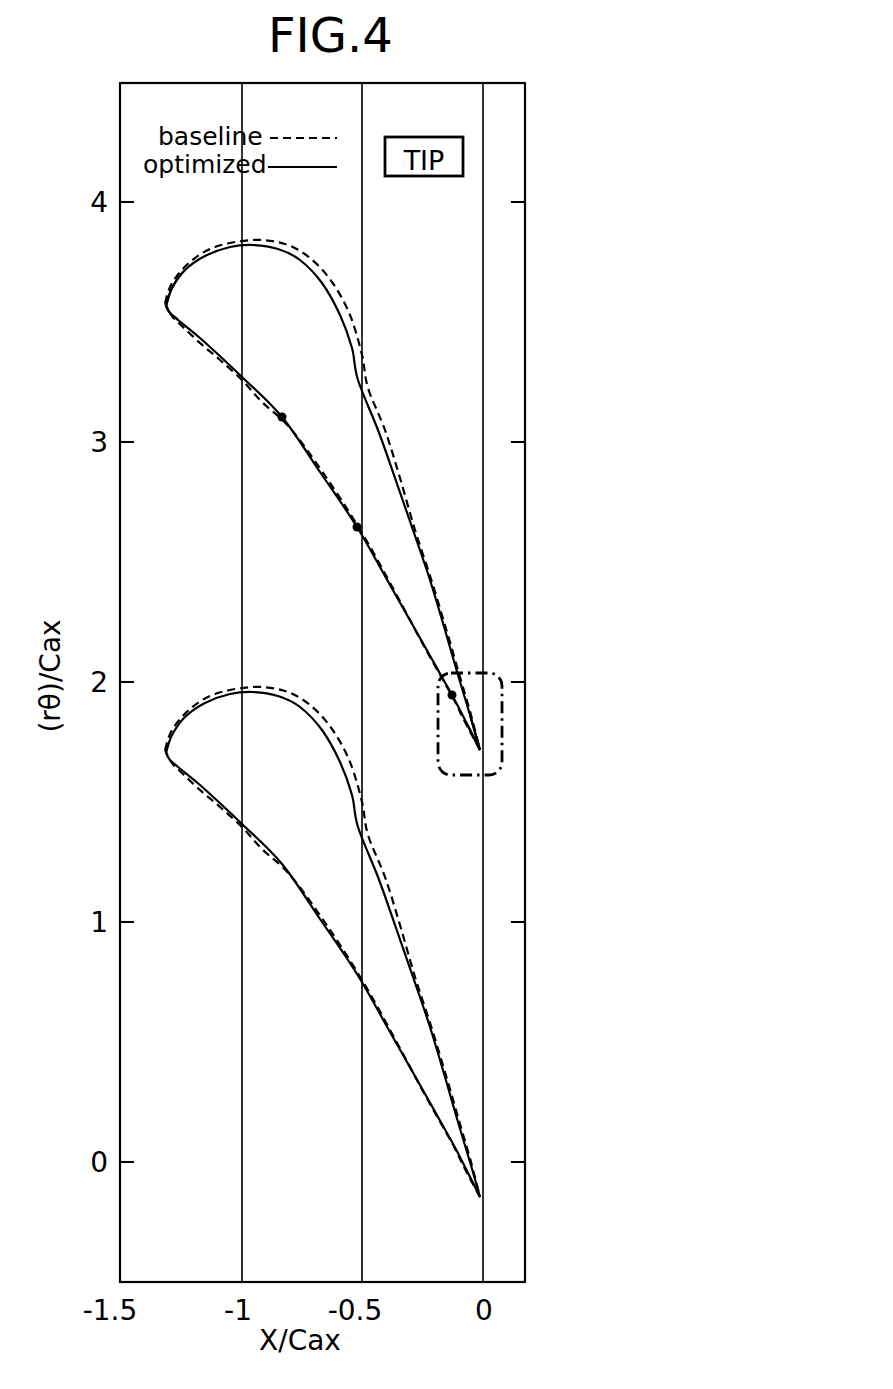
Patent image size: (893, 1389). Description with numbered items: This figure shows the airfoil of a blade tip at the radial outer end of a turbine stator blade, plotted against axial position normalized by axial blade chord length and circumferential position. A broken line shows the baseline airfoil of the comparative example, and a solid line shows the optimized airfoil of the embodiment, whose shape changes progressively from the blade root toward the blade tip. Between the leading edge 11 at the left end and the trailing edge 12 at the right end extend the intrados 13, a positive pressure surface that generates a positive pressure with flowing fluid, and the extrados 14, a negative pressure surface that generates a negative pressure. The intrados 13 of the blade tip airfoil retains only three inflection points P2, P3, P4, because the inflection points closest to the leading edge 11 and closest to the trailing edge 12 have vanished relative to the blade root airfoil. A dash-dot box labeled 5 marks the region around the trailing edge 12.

The trailing edge tip region 5 is at (500, 728).
The leading edge 11 is at (167, 303).
The trailing edge 12 is at (478, 753).
The intrados 13 is at (320, 470).
The extrados 14 is at (377, 423).
The inflection point P2 is at (281, 419).
The inflection point P3 is at (355, 529).
The inflection point P4 is at (450, 698).